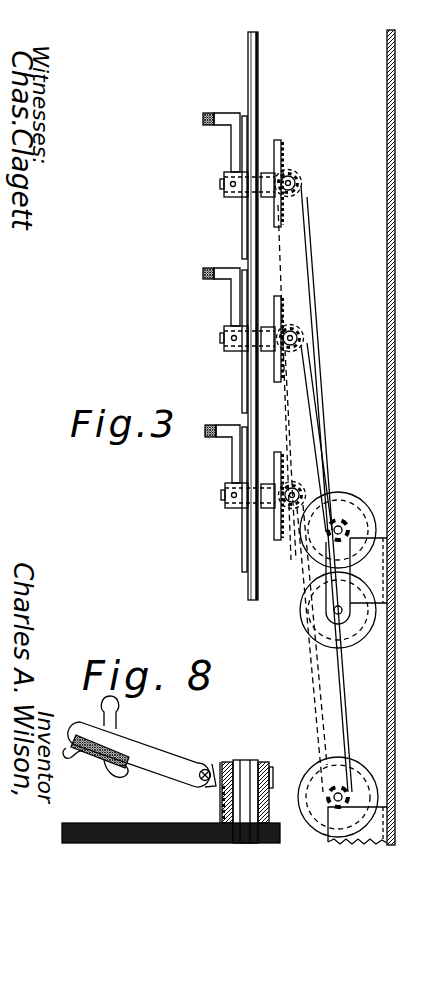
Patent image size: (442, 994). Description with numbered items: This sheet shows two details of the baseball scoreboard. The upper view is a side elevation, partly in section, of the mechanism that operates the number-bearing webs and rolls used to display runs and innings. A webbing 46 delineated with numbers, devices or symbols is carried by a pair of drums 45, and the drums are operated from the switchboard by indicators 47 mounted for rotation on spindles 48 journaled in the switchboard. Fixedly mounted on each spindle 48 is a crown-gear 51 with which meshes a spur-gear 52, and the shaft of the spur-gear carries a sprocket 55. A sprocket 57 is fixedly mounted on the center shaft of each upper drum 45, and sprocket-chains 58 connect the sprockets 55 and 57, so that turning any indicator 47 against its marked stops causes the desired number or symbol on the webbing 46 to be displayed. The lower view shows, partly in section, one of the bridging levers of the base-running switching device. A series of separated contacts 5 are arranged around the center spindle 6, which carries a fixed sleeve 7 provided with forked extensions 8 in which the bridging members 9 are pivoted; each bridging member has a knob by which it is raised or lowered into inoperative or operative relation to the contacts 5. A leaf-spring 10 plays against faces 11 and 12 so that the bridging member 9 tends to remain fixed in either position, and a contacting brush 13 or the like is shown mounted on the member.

In FIG. 3, the drums 45 is at (344, 507).
In FIG. 3, the webbing 46 is at (253, 82).
In FIG. 3, the indicators 47 is at (205, 113).
In FIG. 3, the spindles 48 is at (224, 178).
In FIG. 3, the crown-gear 51 is at (283, 150).
In FIG. 3, the spur-gear 52 is at (300, 170).
In FIG. 3, the sprocket 55 is at (291, 185).
In FIG. 3, the sprocket 57 is at (347, 528).
In FIG. 3, the sprocket-chains 58 is at (322, 372).
In FIG. 8, the contacts 5 is at (118, 823).
In FIG. 8, the center spindle 6 is at (244, 763).
In FIG. 8, the sleeve 7 is at (273, 775).
In FIG. 8, the forked extensions 8 is at (224, 766).
In FIG. 8, the bridging members 9 is at (154, 757).
In FIG. 8, the leaf-spring 10 is at (220, 762).
In FIG. 8, the face 11 is at (213, 780).
In FIG. 8, the face 12 is at (203, 769).
In FIG. 8, the contacting brush 13 is at (122, 777).